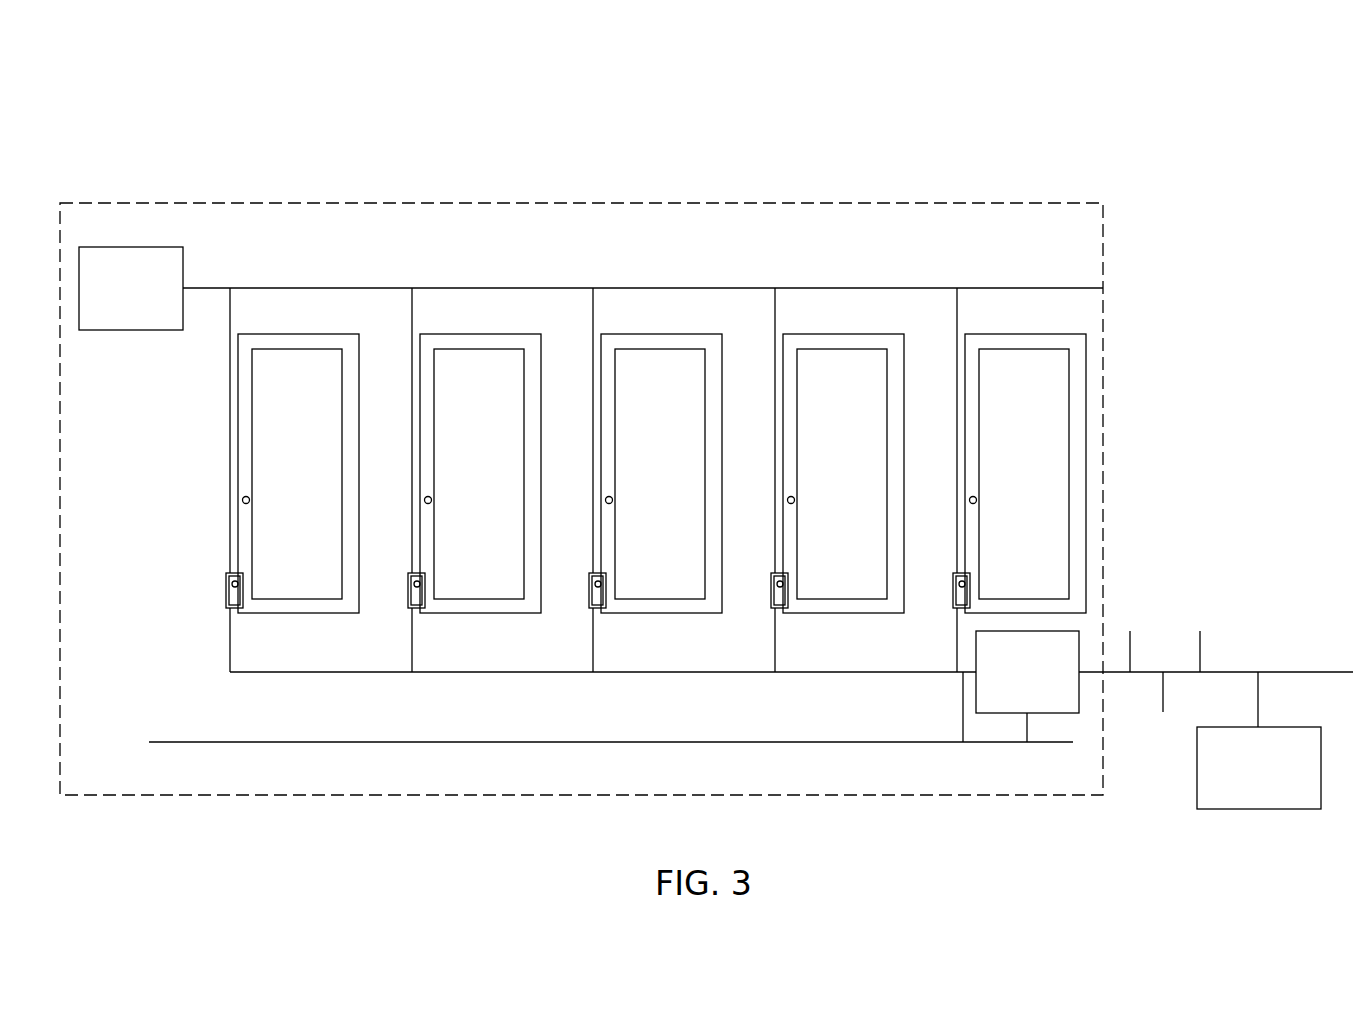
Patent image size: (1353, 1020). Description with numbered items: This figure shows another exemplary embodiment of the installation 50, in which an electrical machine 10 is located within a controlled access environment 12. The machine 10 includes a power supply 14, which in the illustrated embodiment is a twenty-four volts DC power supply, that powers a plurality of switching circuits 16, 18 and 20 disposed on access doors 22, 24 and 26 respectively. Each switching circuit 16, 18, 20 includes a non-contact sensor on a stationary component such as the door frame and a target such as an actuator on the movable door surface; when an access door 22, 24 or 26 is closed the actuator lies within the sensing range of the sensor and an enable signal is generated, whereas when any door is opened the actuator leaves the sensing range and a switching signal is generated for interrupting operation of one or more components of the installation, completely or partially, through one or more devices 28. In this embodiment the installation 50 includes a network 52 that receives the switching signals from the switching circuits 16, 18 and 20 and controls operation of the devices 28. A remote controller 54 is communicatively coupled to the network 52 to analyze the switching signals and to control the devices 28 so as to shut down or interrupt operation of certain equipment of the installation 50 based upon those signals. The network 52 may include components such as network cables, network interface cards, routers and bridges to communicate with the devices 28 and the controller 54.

The electrical machine 10 is at (990, 249).
The controlled access environment 12 is at (945, 203).
The power supply 14 is at (183, 258).
The switching circuit 16 is at (226, 590).
The switching circuit 18 is at (408, 594).
The switching circuit 20 is at (589, 596).
The access door 22 is at (300, 334).
The access door 24 is at (482, 334).
The access door 26 is at (663, 334).
The device 28 is at (1080, 705).
The installation 50 is at (1230, 110).
The network 52 is at (1180, 670).
The remote controller 54 is at (1258, 809).